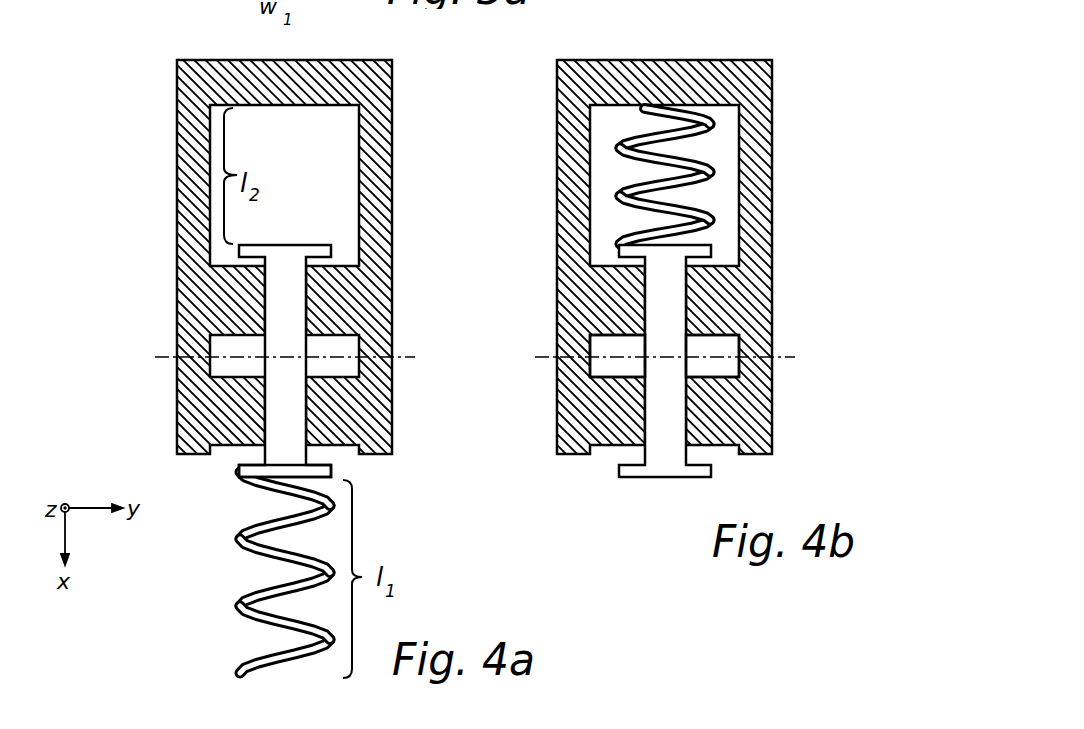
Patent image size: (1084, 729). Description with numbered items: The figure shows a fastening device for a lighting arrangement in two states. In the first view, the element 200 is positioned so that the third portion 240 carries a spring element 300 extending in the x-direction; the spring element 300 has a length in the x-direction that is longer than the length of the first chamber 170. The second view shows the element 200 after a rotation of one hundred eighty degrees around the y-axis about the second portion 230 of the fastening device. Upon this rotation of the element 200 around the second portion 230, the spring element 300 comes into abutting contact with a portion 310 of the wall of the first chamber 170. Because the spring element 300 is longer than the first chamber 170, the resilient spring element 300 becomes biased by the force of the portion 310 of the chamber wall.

In FIG. 4B, the first chamber 170 is at (608, 220).
In FIG. 4A, the element 200 is at (303, 404).
In FIG. 4B, the second portion 230 is at (662, 350).
In FIG. 4A, the third portion 240 is at (286, 466).
In FIG. 4A, the spring element 300 is at (247, 605).
In FIG. 4B, the spring element 300 is at (687, 137).
In FIG. 4B, the portion of the wall of the first chamber 310 is at (664, 93).